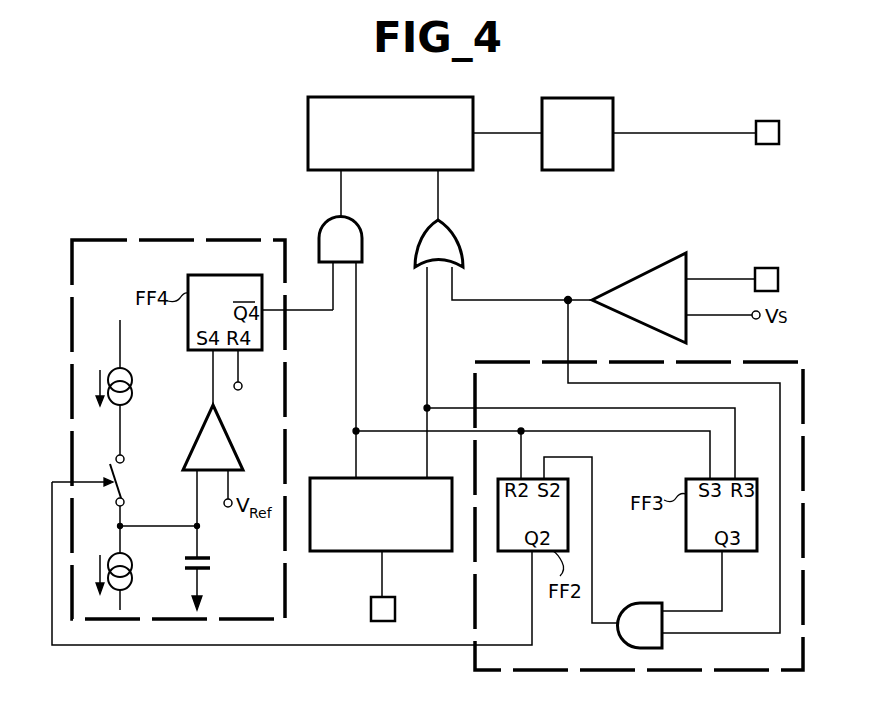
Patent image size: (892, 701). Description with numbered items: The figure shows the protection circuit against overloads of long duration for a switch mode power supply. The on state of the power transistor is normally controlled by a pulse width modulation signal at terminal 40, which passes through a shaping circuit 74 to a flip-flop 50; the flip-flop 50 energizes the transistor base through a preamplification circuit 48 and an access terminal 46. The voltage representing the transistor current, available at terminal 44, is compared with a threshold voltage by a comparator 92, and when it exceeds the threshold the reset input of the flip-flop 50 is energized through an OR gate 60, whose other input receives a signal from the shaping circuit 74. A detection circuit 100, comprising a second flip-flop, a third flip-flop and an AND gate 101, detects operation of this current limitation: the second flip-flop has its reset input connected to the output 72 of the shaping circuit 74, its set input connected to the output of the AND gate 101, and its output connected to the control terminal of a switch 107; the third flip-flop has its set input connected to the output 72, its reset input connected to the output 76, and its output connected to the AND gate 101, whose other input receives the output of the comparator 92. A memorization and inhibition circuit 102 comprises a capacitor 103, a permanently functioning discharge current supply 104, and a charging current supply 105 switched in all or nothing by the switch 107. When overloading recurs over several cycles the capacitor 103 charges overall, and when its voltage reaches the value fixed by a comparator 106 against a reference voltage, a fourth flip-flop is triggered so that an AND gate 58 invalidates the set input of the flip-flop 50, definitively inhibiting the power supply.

The terminal 40 is at (371, 608).
The terminal 44 is at (762, 268).
The access terminal 46 is at (763, 121).
The preamplification circuit 48 is at (613, 110).
The flip-flop 50 is at (308, 122).
The AND gate 58 is at (324, 222).
The OR gate 60 is at (458, 240).
The output of the shaping circuit 72 is at (354, 436).
The shaping circuit 74 is at (324, 478).
The output of the shaping circuit 76 is at (425, 449).
The comparator 92 is at (638, 276).
The detection circuit 100 is at (475, 666).
The AND gate 101 is at (640, 602).
The memorization and inhibition circuit 102 is at (106, 238).
The capacitor 103 is at (204, 556).
The current supply 104 is at (154, 561).
The current supply 105 is at (132, 383).
The comparator 106 is at (232, 430).
The switch 107 is at (125, 485).